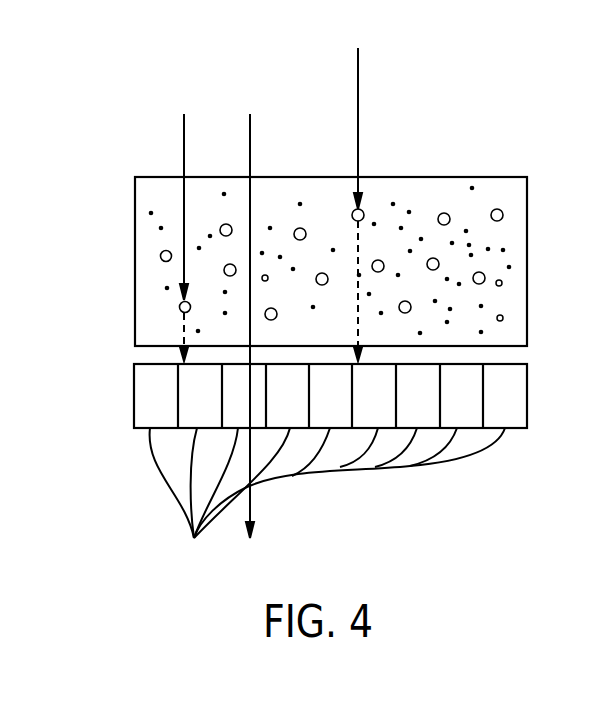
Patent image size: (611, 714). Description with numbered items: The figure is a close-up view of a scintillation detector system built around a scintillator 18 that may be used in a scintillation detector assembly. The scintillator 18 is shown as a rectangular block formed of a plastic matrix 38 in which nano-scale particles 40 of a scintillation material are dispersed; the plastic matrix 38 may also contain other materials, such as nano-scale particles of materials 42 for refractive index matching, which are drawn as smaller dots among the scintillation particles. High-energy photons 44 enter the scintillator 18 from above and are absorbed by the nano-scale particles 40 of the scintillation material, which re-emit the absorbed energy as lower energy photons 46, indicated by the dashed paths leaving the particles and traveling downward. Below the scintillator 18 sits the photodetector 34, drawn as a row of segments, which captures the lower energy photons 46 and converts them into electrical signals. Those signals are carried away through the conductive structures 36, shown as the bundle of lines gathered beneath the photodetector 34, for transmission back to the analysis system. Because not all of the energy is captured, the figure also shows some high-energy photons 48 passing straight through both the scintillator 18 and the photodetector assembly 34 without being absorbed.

The scintillator 18 is at (527, 207).
The photodetector 34 is at (527, 397).
The conductive structures 36 is at (473, 453).
The plastic matrix 38 is at (497, 187).
The nano-scale particles of scintillation material 40 is at (160, 256).
The nano-scale particles of materials for refractive index matching 42 is at (488, 249).
The high-energy photons 44 is at (184, 143).
The lower energy photons 46 is at (183, 333).
The high-energy photons passing through 48 is at (252, 140).